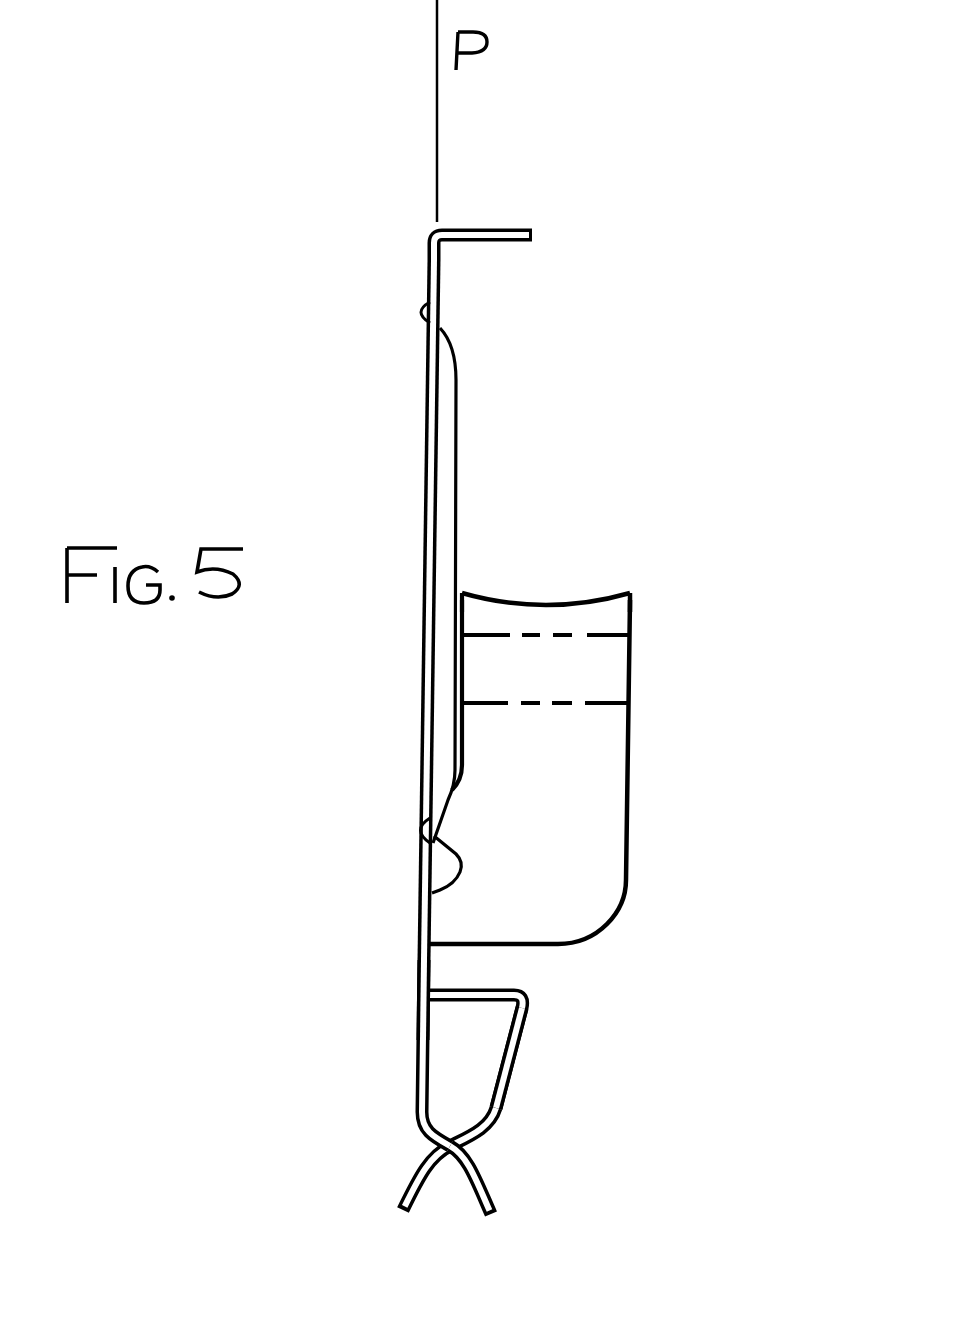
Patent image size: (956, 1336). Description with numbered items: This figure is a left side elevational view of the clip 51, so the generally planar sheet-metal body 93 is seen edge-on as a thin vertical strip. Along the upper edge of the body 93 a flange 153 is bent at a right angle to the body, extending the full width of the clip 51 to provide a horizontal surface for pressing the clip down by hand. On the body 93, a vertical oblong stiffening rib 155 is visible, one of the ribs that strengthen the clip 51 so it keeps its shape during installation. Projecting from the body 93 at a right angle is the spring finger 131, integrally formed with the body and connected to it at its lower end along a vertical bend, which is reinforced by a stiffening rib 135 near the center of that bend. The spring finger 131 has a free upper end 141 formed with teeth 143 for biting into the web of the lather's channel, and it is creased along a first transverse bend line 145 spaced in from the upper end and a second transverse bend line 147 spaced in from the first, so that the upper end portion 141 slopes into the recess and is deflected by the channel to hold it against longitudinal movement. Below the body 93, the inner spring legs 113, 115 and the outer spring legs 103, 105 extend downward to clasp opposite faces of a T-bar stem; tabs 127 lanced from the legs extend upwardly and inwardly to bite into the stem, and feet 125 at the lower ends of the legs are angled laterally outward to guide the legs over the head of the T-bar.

The clip 51 is at (392, 275).
The body 93 is at (437, 281).
The flange 153 is at (508, 232).
The stiffening ribs 155 is at (450, 428).
The spring finger 131 is at (605, 857).
The free upper end 141 is at (540, 600).
The tooth 143 is at (464, 597).
The first transverse bend line 145 is at (608, 637).
The second transverse bend line 147 is at (607, 707).
The stiffening rib 135 is at (443, 860).
The inner spring leg 113 is at (423, 1037).
The inner spring leg 115 is at (423, 1000).
The outer spring leg 103 is at (518, 1050).
The outer spring leg 105 is at (509, 1058).
The tab 127 is at (451, 1128).
The feet 125 is at (423, 1188).